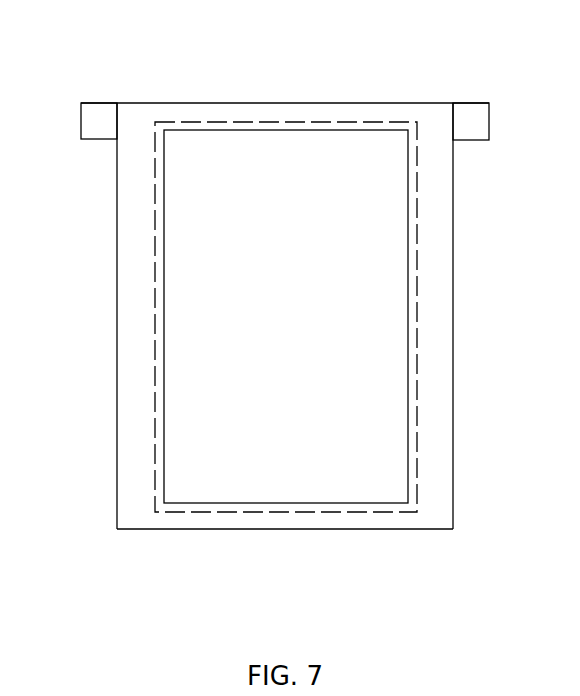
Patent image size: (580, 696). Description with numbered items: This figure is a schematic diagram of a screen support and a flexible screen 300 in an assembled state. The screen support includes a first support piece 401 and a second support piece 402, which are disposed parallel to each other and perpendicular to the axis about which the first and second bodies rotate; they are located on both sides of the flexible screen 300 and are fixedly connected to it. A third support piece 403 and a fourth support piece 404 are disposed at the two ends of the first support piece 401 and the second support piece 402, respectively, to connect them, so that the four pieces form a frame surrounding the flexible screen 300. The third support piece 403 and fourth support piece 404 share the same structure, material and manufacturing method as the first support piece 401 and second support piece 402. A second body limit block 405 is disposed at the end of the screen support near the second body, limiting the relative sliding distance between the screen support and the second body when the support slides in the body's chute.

The flexible screen 300 is at (350, 140).
The first support piece 401 is at (127, 302).
The second support piece 402 is at (438, 298).
The third support piece 403 is at (253, 113).
The fourth support piece 404 is at (243, 520).
The second body limit block 405 is at (472, 125).